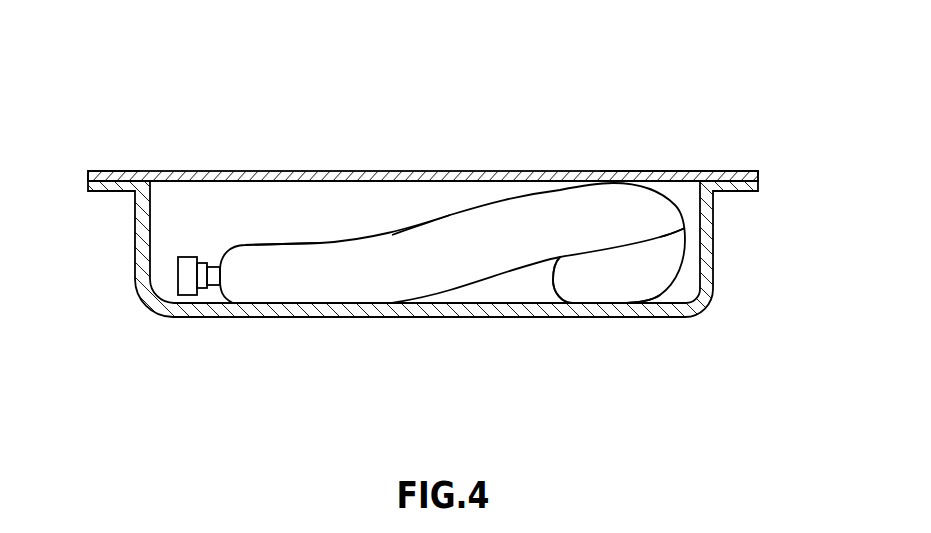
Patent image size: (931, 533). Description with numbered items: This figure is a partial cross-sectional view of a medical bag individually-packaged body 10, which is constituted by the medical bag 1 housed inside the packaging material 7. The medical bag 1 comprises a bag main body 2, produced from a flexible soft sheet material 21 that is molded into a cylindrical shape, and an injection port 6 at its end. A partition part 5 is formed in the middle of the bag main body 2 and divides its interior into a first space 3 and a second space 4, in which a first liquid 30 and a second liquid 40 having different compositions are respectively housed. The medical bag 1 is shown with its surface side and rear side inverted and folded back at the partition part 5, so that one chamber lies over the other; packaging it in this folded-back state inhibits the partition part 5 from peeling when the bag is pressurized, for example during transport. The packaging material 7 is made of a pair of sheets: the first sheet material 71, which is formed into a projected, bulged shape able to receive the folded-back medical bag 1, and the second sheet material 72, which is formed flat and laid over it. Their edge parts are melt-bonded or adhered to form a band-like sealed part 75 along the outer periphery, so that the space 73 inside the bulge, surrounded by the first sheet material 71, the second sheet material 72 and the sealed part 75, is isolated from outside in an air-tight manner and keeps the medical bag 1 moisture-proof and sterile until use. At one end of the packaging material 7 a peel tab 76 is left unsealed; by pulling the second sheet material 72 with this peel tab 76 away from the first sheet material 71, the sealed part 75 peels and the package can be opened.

The medical bag individually-packaged body 10 is at (660, 110).
The medical bag 1 is at (433, 207).
The bag main body 2 is at (324, 226).
The sheet material 21 is at (288, 268).
The first space 3 is at (343, 280).
The first liquid 30 is at (383, 280).
The second space 4 is at (602, 273).
The second liquid 40 is at (625, 268).
The partition part 5 is at (688, 232).
The injection port 6 is at (189, 293).
The packaging material 7 is at (732, 250).
The first sheet material 71 is at (707, 287).
The second sheet material 72 is at (505, 171).
The space 73 is at (377, 207).
The sealed part 75 is at (742, 171).
The peel tab 76 is at (91, 171).